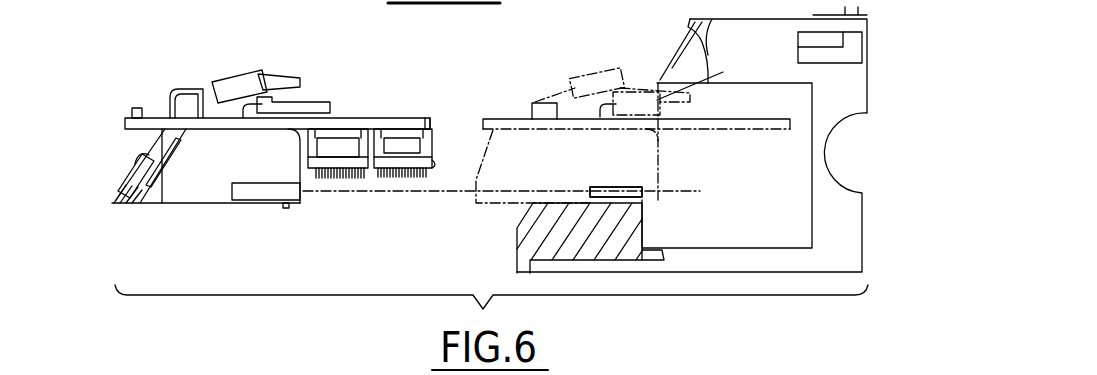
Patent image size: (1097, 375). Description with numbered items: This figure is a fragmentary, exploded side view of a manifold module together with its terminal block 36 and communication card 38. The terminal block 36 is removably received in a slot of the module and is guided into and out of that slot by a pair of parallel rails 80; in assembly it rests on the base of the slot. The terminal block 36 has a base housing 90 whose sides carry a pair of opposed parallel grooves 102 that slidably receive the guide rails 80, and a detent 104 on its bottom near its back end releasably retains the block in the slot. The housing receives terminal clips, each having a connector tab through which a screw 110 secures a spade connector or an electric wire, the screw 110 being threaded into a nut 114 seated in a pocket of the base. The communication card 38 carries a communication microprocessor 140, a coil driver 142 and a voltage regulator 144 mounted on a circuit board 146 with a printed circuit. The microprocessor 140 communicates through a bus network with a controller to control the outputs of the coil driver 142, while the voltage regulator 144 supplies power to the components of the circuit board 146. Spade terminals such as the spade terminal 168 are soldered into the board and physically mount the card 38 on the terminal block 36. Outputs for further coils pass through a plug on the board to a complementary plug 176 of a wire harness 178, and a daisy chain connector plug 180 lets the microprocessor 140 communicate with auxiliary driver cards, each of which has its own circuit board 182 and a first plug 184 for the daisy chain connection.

The terminal block 36 is at (106, 212).
The communication card 38 is at (146, 66).
The parallel rails 80 is at (610, 187).
The base housing 90 is at (203, 204).
The grooves 102 is at (255, 187).
The detent 104 is at (286, 209).
The screw 110 is at (133, 158).
The nut 114 is at (349, 131).
The communication microprocessor 140 is at (433, 131).
The coil driver 142 is at (240, 80).
The voltage regulator 144 is at (300, 97).
The circuit board 146 is at (414, 127).
The spade terminal 168 is at (160, 132).
The complementary plug 176 is at (307, 160).
The wire harness 178 is at (317, 177).
The daisy chain connector plug 180 is at (433, 146).
The circuit board 182 is at (433, 163).
The first plug 184 is at (423, 178).